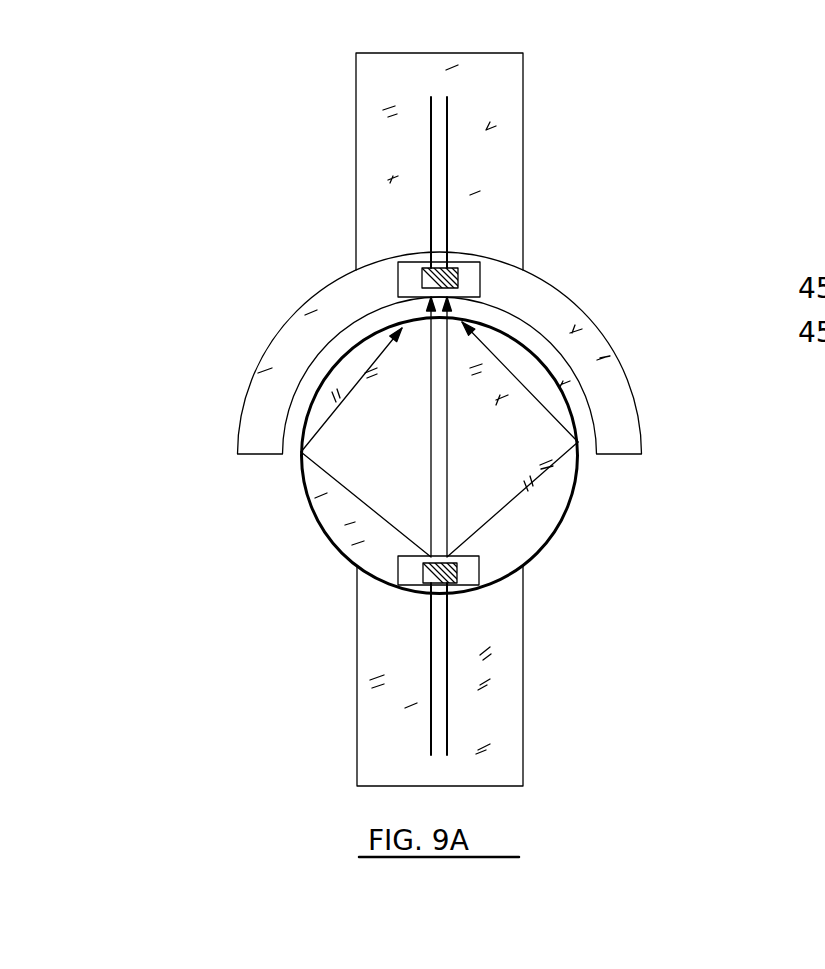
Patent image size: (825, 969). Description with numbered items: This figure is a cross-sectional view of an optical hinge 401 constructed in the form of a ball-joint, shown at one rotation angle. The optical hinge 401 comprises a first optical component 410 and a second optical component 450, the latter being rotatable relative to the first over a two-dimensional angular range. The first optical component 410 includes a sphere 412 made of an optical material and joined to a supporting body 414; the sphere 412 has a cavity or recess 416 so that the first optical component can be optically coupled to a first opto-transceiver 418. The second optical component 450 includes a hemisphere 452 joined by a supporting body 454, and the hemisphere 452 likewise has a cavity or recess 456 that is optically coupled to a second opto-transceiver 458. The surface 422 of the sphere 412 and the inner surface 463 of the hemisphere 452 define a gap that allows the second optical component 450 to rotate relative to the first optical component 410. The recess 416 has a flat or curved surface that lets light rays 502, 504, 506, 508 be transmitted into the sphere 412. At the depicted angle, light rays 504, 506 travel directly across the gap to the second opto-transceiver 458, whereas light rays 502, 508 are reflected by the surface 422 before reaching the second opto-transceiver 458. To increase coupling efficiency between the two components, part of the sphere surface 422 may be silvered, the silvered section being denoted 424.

The optical hinge 401 is at (653, 505).
The first optical component 410 is at (552, 622).
The sphere 412 is at (555, 497).
The supporting body 414 is at (510, 706).
The cavity or recess 416 is at (407, 572).
The first opto-transceiver 418 is at (435, 583).
The surface of the sphere 422 is at (558, 380).
The silvered section of the surface 424 is at (540, 554).
The second optical component 450 is at (550, 243).
The hemisphere 452 is at (553, 318).
The supporting body 454 is at (493, 180).
The cavity or recess 456 is at (412, 287).
The second opto-transceiver 458 is at (422, 270).
The inner surface of the hemisphere 463 is at (283, 436).
The light ray 502 is at (552, 460).
The light ray 504 is at (447, 470).
The light ray 506 is at (430, 467).
The light ray 508 is at (345, 402).